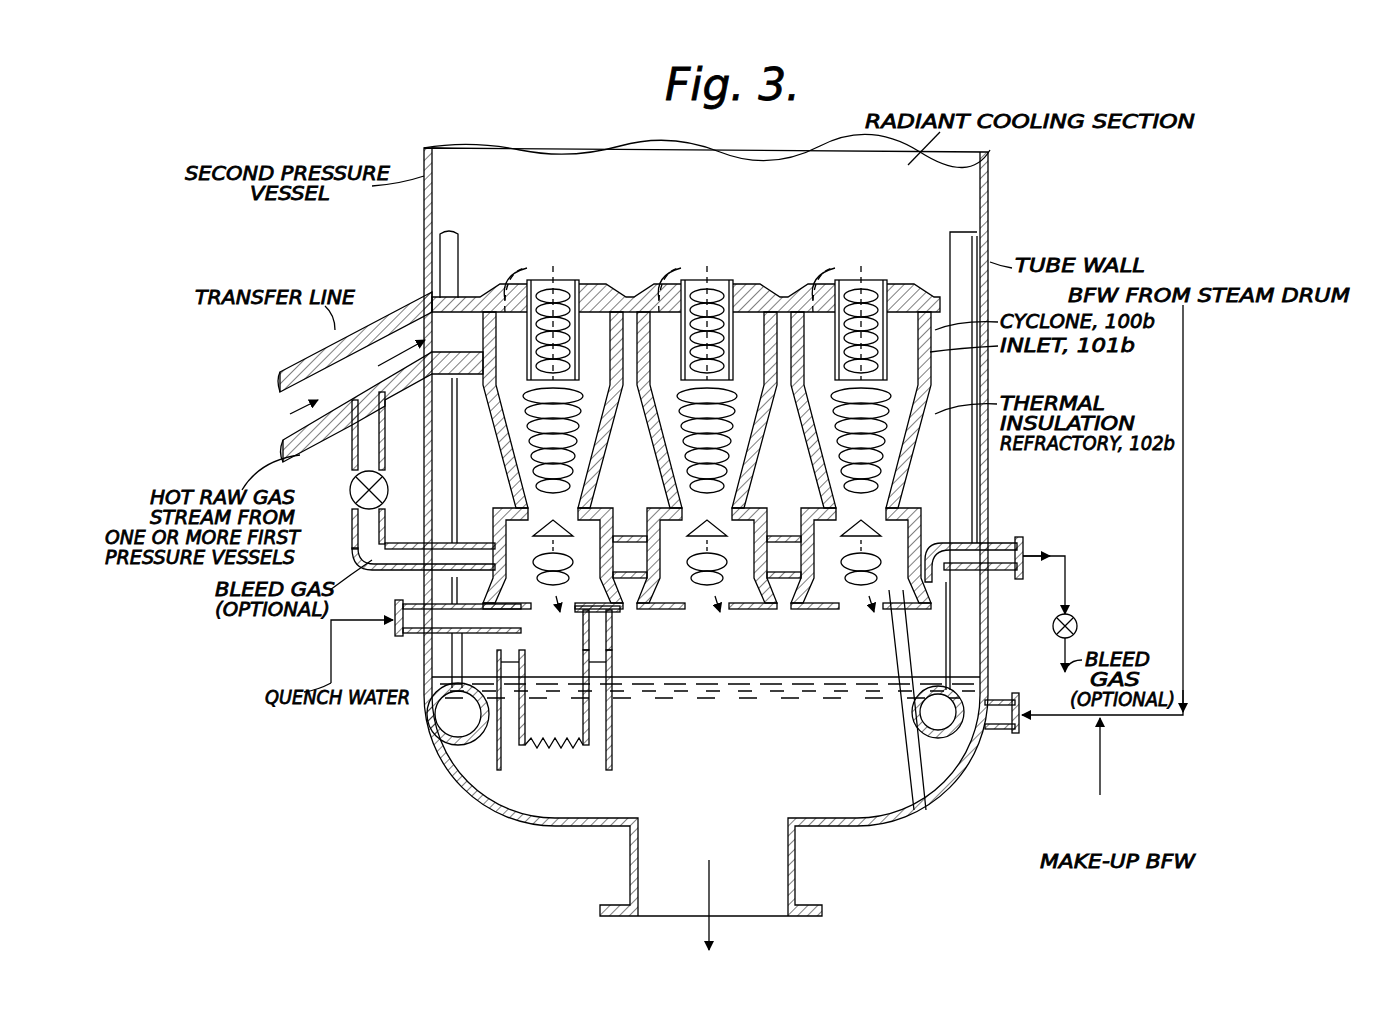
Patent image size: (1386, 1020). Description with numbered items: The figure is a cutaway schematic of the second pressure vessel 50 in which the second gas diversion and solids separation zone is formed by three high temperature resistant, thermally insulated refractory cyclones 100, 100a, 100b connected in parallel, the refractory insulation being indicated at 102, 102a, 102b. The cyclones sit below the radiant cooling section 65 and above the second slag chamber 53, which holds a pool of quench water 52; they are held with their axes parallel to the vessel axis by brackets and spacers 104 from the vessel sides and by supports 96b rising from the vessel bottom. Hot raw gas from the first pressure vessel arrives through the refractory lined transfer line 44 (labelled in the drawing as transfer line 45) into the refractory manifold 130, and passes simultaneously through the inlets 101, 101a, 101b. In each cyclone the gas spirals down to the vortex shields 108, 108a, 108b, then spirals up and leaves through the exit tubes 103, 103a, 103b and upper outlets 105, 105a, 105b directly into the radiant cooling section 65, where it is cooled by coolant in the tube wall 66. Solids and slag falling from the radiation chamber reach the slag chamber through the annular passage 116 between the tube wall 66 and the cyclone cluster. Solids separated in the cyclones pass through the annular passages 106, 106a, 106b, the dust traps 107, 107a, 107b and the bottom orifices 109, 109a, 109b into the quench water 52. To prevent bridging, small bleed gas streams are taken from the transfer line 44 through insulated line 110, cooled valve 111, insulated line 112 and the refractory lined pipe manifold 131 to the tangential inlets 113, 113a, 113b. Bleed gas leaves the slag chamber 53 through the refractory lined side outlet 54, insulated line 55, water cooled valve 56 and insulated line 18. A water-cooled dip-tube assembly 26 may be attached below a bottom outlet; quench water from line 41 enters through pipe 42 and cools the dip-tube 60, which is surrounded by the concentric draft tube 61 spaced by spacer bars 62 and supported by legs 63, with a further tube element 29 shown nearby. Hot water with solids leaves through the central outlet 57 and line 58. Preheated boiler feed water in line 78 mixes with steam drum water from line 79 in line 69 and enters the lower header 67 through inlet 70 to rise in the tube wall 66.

The insulated line 18 is at (1070, 650).
The dip-tube assembly 26 is at (535, 664).
The tube 29 is at (612, 764).
The quench water line 41 is at (330, 638).
The pipe 42 is at (410, 634).
The transfer line 44 is at (305, 398).
The transfer line 45 is at (306, 374).
The second pressure vessel 50 is at (988, 198).
The quench water 52 is at (726, 782).
The second slag chamber 53 is at (735, 668).
The refractory lined side outlet 54 is at (1000, 543).
The insulated line 55 is at (1070, 580).
The water cooled valve 56 is at (1074, 615).
The central outlet 57 is at (632, 847).
The line 58 is at (706, 932).
The dip-tube 60 is at (592, 720).
The draft tube 61 is at (592, 712).
The spacer bars 62 is at (600, 655).
The supporting legs 63 is at (480, 770).
The radiant cooling section 65 is at (722, 190).
The tube wall 66 is at (978, 242).
The lower header 67 is at (432, 714).
The line 69 is at (1020, 732).
The inlet 70 is at (995, 700).
The line 78 is at (1100, 770).
The line 79 is at (1185, 372).
The supports 96b is at (908, 700).
The cyclone 100 is at (550, 370).
The cyclone 100a is at (712, 366).
The cyclone 100b is at (858, 357).
The inlet 101 is at (510, 300).
The inlet 101a is at (665, 300).
The inlet 101b is at (826, 300).
The thermal insulation refractory 102 is at (520, 470).
The thermal insulation refractory 102a is at (674, 470).
The thermal insulation refractory 102b is at (826, 470).
The exit tube 103 is at (513, 312).
The exit tube 103a is at (667, 312).
The exit tube 103b is at (820, 312).
The brackets and spacers 104 is at (470, 575).
The upper outlet 105 is at (557, 285).
The upper outlet 105a is at (717, 284).
The upper outlet 105b is at (871, 286).
The annular passage 106 is at (530, 505).
The annular passage 106a is at (684, 505).
The annular passage 106b is at (838, 505).
The dust trap 107 is at (629, 557).
The dust trap 107a is at (785, 557).
The dust trap 107b is at (918, 582).
The vortex shield 108 is at (553, 555).
The vortex shield 108a is at (707, 555).
The vortex shield 108b is at (861, 555).
The bottom orifice 109 is at (550, 614).
The bottom orifice 109a is at (718, 614).
The bottom orifice 109b is at (866, 614).
The insulated line 110 is at (352, 440).
The cooled valve 111 is at (350, 493).
The insulated line 112 is at (393, 545).
The tangential inlet 113 is at (510, 603).
The tangential inlet 113a is at (692, 592).
The tangential inlet 113b is at (845, 592).
The annular passage 116 is at (945, 366).
The manifold 130 is at (440, 300).
The refractory lined pipe manifold 131 is at (520, 535).